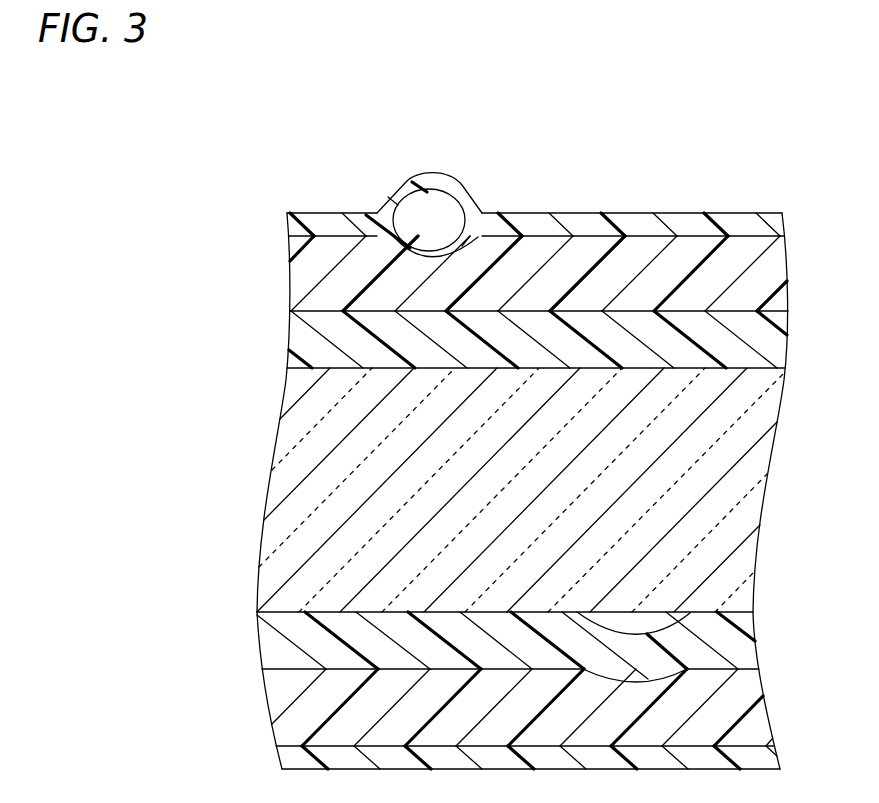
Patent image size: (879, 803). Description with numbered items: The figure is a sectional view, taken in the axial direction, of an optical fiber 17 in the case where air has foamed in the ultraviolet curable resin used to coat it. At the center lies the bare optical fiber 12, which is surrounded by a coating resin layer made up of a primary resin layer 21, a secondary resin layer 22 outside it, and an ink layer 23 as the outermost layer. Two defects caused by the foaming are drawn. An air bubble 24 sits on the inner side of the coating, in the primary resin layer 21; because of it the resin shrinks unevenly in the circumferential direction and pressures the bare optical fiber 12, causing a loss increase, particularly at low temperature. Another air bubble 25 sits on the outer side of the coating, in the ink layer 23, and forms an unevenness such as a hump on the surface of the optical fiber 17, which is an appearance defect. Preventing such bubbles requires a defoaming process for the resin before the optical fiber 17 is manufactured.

The optical fiber 17 is at (644, 144).
The bare optical fiber 12 is at (327, 505).
The primary resin layer 21 is at (315, 343).
The secondary resin layer 22 is at (303, 285).
The ink layer 23 is at (298, 230).
The air bubble 24 is at (647, 630).
The air bubble 25 is at (437, 208).